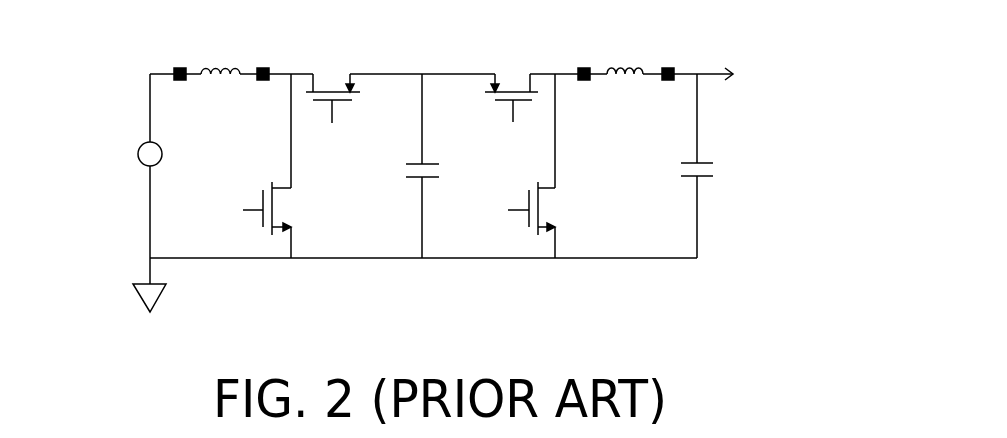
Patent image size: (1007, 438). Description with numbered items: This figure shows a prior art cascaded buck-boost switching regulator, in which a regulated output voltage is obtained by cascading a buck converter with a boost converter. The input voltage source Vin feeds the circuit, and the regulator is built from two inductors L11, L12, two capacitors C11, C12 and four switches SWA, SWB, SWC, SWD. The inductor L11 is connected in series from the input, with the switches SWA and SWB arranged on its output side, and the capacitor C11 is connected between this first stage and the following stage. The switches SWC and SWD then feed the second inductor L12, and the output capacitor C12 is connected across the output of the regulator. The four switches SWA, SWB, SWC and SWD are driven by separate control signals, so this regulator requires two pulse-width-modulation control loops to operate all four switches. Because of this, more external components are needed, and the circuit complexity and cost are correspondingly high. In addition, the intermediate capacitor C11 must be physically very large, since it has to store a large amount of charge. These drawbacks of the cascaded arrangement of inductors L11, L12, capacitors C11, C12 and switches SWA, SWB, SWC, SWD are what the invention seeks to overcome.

The input voltage source Vin is at (135, 154).
The inductor L11 is at (221, 56).
The switch SWA is at (333, 66).
The switch SWB is at (292, 208).
The capacitor C11 is at (408, 171).
The switch SWC is at (511, 66).
The switch SWD is at (556, 208).
The inductor L12 is at (626, 56).
The capacitor C12 is at (683, 171).